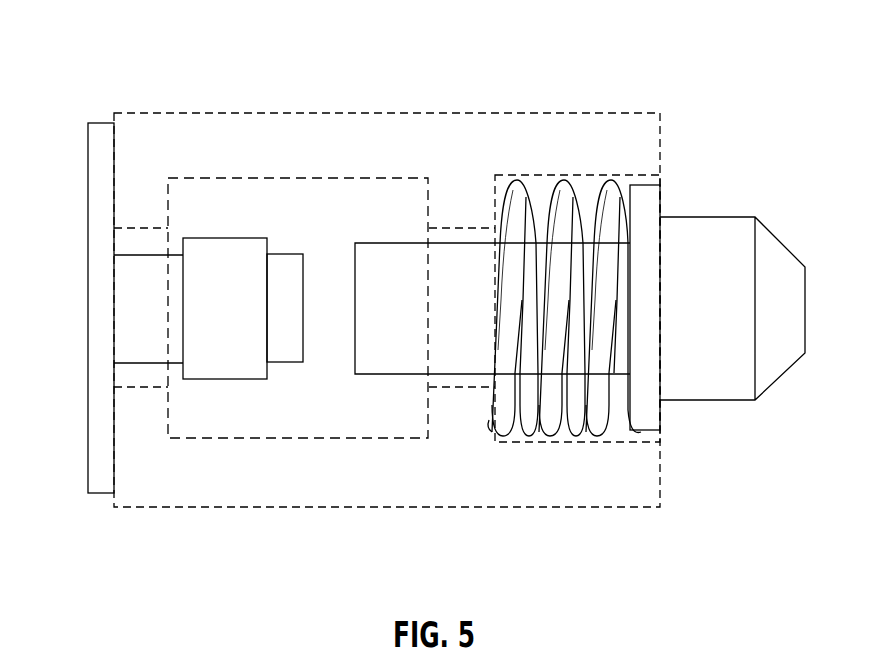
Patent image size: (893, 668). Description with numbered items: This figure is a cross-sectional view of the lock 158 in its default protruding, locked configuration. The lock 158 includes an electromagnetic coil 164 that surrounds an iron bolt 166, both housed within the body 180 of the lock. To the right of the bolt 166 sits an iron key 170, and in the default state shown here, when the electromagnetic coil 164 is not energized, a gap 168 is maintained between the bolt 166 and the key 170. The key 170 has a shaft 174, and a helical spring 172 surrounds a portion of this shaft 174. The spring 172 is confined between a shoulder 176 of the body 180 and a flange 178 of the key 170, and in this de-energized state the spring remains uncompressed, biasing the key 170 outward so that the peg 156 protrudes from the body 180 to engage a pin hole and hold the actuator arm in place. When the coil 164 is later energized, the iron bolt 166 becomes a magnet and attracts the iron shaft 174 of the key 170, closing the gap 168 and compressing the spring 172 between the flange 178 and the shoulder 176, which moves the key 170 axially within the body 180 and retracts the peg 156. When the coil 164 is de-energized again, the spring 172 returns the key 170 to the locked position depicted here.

The peg 156 is at (717, 235).
The lock 158 is at (493, 40).
The electromagnetic coil 164 is at (213, 250).
The iron bolt 166 is at (143, 300).
The gap 168 is at (349, 320).
The iron key 170 is at (448, 331).
The helical spring 172 is at (567, 182).
The shaft 174 is at (458, 257).
The shoulder 176 is at (493, 190).
The flange 178 is at (647, 193).
The body 180 is at (321, 136).